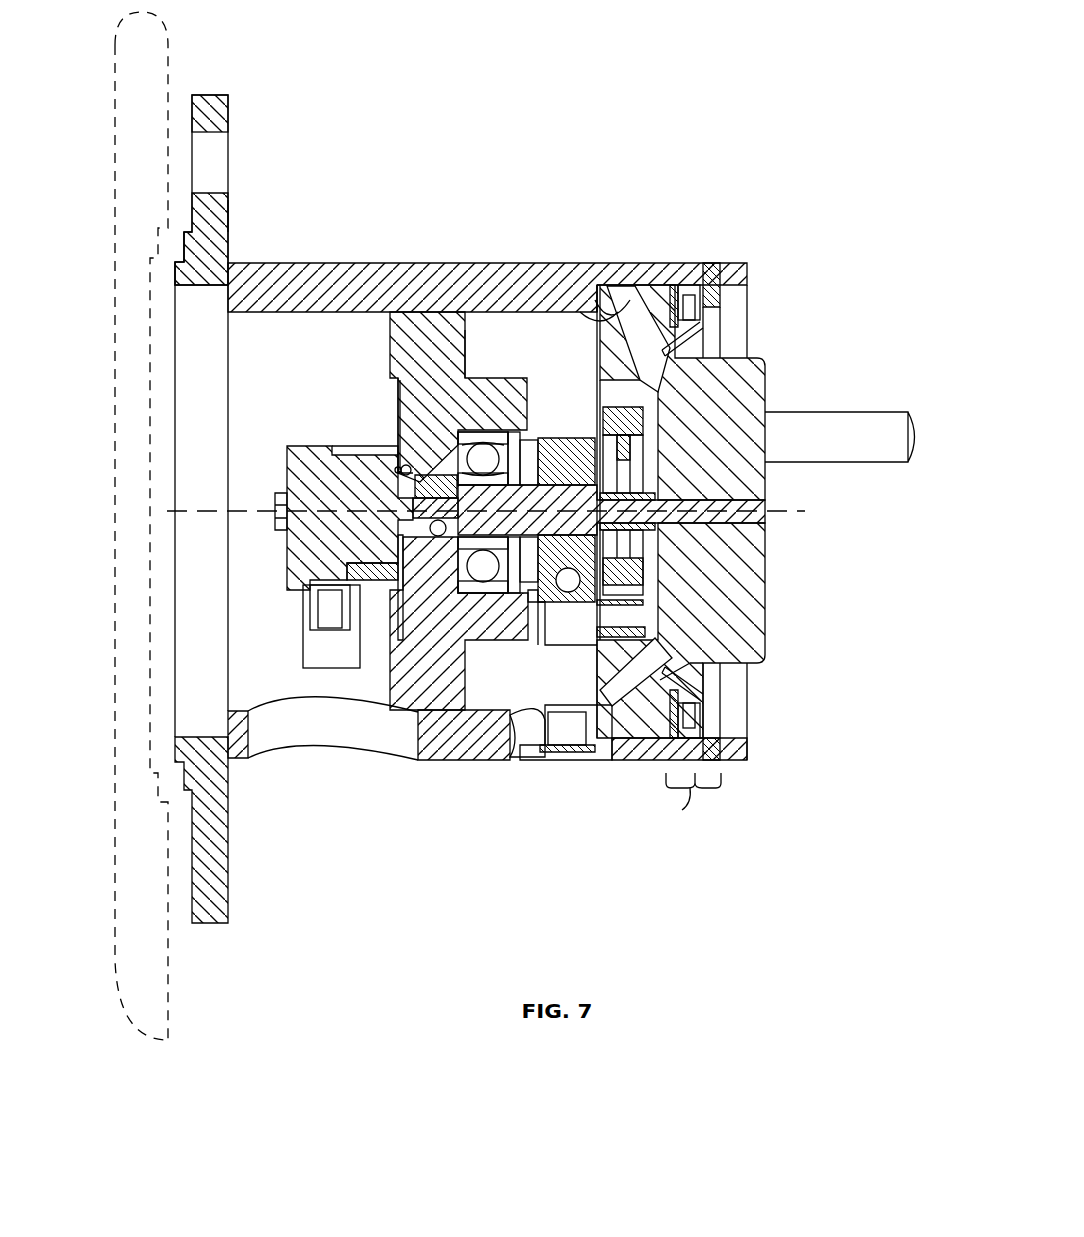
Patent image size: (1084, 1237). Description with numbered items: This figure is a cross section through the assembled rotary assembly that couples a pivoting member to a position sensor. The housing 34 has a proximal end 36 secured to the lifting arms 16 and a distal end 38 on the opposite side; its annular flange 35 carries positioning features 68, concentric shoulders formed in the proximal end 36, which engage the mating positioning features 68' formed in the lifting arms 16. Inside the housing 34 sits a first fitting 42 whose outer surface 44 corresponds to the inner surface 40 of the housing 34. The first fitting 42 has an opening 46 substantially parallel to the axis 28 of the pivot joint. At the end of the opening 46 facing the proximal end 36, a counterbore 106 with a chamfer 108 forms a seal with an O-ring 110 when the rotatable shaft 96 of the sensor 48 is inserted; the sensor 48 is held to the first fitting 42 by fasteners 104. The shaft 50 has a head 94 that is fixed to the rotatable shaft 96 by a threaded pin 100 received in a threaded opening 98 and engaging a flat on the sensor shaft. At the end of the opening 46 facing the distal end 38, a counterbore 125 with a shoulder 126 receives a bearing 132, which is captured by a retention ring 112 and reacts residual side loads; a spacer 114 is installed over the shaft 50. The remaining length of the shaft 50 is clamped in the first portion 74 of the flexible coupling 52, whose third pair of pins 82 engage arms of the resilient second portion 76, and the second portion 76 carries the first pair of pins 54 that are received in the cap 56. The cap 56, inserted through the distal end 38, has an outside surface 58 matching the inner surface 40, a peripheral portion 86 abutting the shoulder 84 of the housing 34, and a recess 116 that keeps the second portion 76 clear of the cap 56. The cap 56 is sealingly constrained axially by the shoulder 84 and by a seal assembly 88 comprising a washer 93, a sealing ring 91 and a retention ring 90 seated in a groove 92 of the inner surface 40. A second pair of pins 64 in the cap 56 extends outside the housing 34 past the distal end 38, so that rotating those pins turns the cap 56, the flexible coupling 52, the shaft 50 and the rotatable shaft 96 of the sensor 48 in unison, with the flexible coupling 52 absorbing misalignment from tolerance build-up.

The lifting arms 16 is at (182, 35).
The axis 28 is at (210, 511).
The housing 34 is at (345, 263).
The annular flange 35 is at (232, 224).
The proximal end 36 is at (185, 100).
The distal end 38 is at (750, 272).
The inner surface 40 is at (268, 315).
The first fitting 42 is at (515, 640).
The outer surface 44 is at (420, 320).
The opening 46 is at (392, 457).
The sensor 48 is at (320, 446).
The shaft 50 is at (578, 438).
The flexible coupling 52 is at (580, 645).
The first pair of pins 54 is at (768, 500).
The cap 56 is at (770, 365).
The outside surface 58 is at (645, 283).
The second pair of pins 64 is at (888, 466).
The positioning features 68 is at (223, 830).
The mating positioning features 68' is at (239, 200).
The first portion 74 is at (552, 440).
The second portion 76 is at (615, 407).
The third pair of pins 82 is at (660, 615).
The shoulder 84 is at (590, 305).
The peripheral portion 86 is at (605, 315).
The seal assembly 88 is at (692, 810).
The retention ring 90 is at (720, 712).
The sealing ring 91 is at (680, 672).
The groove 92 is at (700, 265).
The washer 93 is at (674, 285).
The head 94 is at (420, 555).
The rotatable shaft 96 is at (432, 445).
The threaded opening 98 is at (392, 600).
The threaded pin 100 is at (303, 598).
The fasteners 104 is at (280, 495).
The counterbore 106 is at (395, 378).
The chamfer 108 is at (425, 478).
The O-ring 110 is at (398, 462).
The retention ring 112 is at (505, 432).
The spacer 114 is at (514, 432).
The recess 116 is at (528, 440).
The counterbore 125 is at (450, 560).
The shoulder 126 is at (460, 380).
The bearing 132 is at (486, 440).